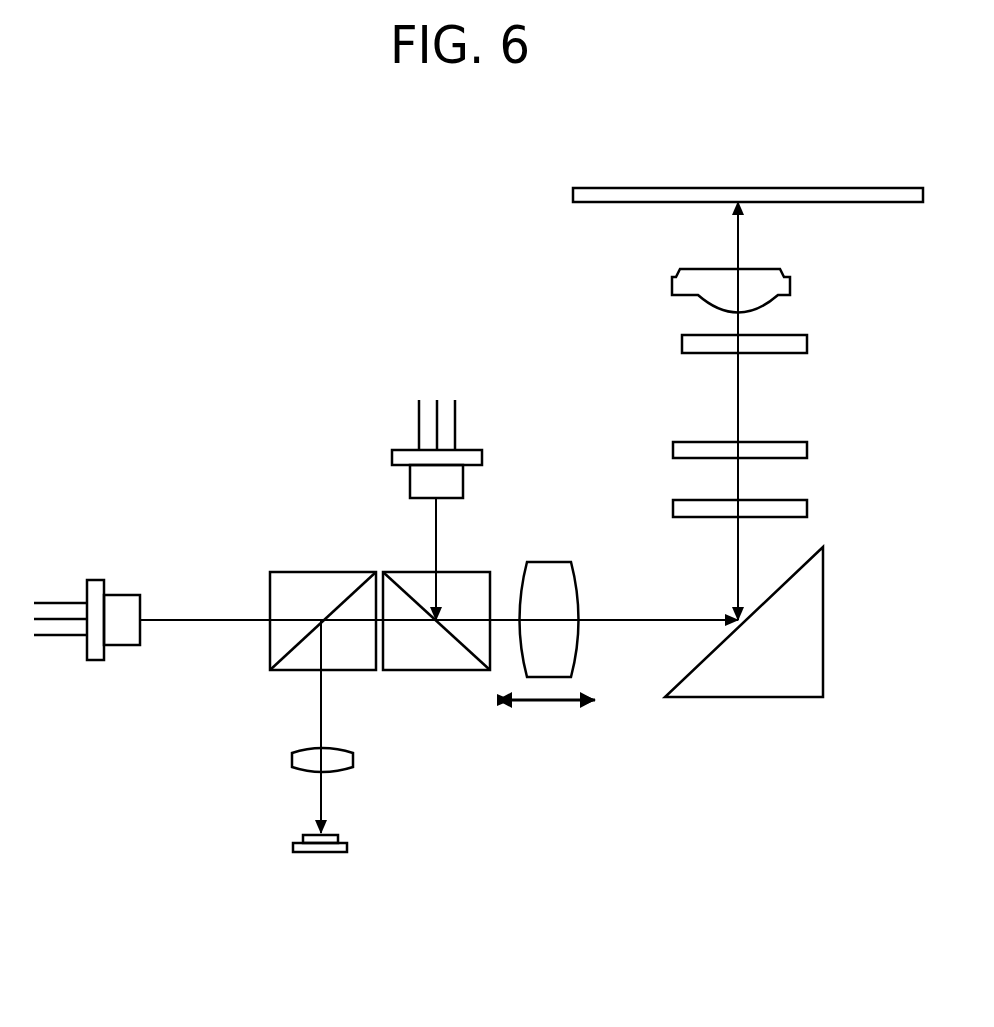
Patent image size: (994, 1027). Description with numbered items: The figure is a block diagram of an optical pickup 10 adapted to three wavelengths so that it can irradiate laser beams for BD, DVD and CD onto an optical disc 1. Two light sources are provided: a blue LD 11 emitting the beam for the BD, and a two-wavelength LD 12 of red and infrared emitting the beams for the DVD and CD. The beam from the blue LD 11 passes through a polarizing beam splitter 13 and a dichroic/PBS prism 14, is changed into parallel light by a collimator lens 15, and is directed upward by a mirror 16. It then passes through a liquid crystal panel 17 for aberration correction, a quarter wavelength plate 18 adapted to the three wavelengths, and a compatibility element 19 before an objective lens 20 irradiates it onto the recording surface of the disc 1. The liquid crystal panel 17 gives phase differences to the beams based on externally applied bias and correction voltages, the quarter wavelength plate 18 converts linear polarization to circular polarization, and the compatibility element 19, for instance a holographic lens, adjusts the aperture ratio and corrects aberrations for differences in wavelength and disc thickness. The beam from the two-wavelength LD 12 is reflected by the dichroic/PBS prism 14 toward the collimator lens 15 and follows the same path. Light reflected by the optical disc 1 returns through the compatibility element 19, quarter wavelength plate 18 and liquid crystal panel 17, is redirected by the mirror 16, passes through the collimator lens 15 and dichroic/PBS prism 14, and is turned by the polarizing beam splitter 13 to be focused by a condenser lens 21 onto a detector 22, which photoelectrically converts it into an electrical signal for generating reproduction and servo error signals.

The optical disc 1 is at (610, 202).
The optical pickup 10 is at (427, 206).
The blue LD 11 is at (97, 578).
The two-wavelength LD 12 is at (418, 407).
The polarizing beam splitter 13 is at (322, 572).
The dichroic/PBS prism 14 is at (465, 572).
The collimator lens 15 is at (553, 562).
The mirror 16 is at (770, 697).
The liquid crystal panel 17 is at (807, 510).
The ¼ wavelength plate 18 is at (807, 452).
The compatibility element 19 is at (807, 345).
The objective lens 20 is at (790, 285).
The condenser lens 21 is at (353, 770).
The detector 22 is at (347, 850).